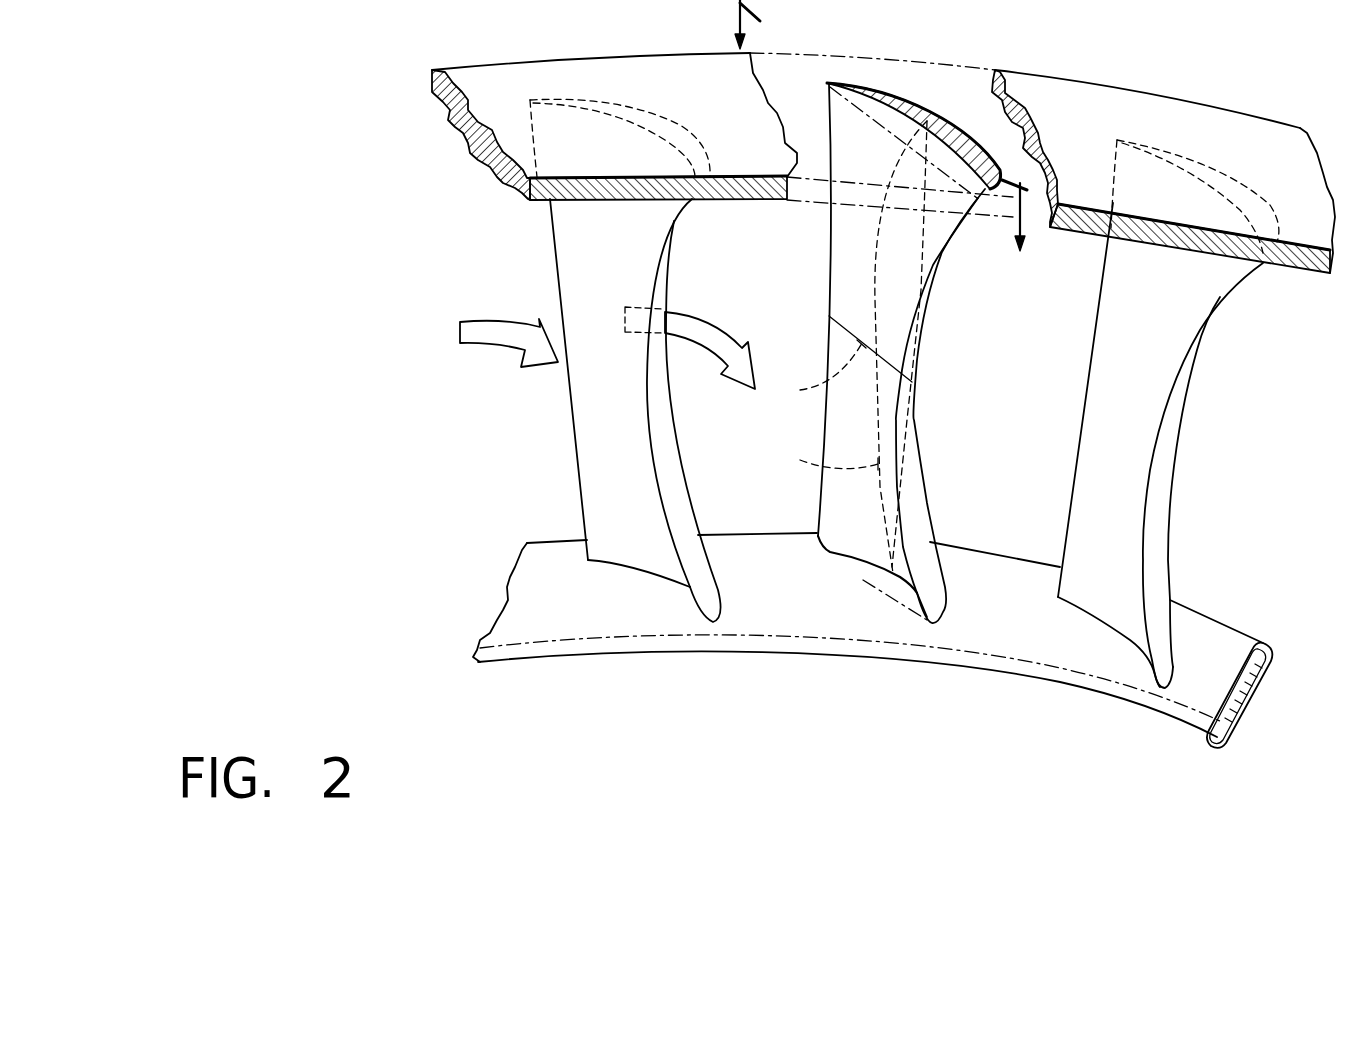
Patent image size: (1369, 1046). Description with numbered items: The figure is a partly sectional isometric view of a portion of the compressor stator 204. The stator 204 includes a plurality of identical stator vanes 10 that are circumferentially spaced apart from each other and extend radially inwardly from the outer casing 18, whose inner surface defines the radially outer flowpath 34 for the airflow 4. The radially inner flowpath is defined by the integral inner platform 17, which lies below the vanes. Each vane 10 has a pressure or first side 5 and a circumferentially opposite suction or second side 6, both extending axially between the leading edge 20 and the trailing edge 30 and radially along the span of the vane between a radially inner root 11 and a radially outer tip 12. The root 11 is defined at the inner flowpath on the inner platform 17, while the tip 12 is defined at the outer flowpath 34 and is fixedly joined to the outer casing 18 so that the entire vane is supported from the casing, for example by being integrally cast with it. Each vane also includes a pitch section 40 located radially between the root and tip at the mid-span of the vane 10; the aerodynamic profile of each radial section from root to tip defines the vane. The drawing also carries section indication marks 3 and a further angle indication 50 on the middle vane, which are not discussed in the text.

The section line 3- 3 is at (877, 132).
The airflow 4 is at (500, 322).
The pressure or first side 5 is at (606, 410).
The suction or second side 6 is at (681, 478).
The stator vane 10 is at (934, 327).
The root 11 is at (860, 563).
The tip 12 is at (910, 97).
The inner platform 17 is at (1208, 640).
The outer casing 18 is at (883, 163).
The leading edge 20 is at (577, 443).
The trailing edge 30 is at (670, 545).
The radially outer flowpath 34 is at (722, 200).
The pitch section 40 is at (830, 380).
The sweep angle 50 is at (820, 463).
The compressor stator 204 is at (1242, 400).